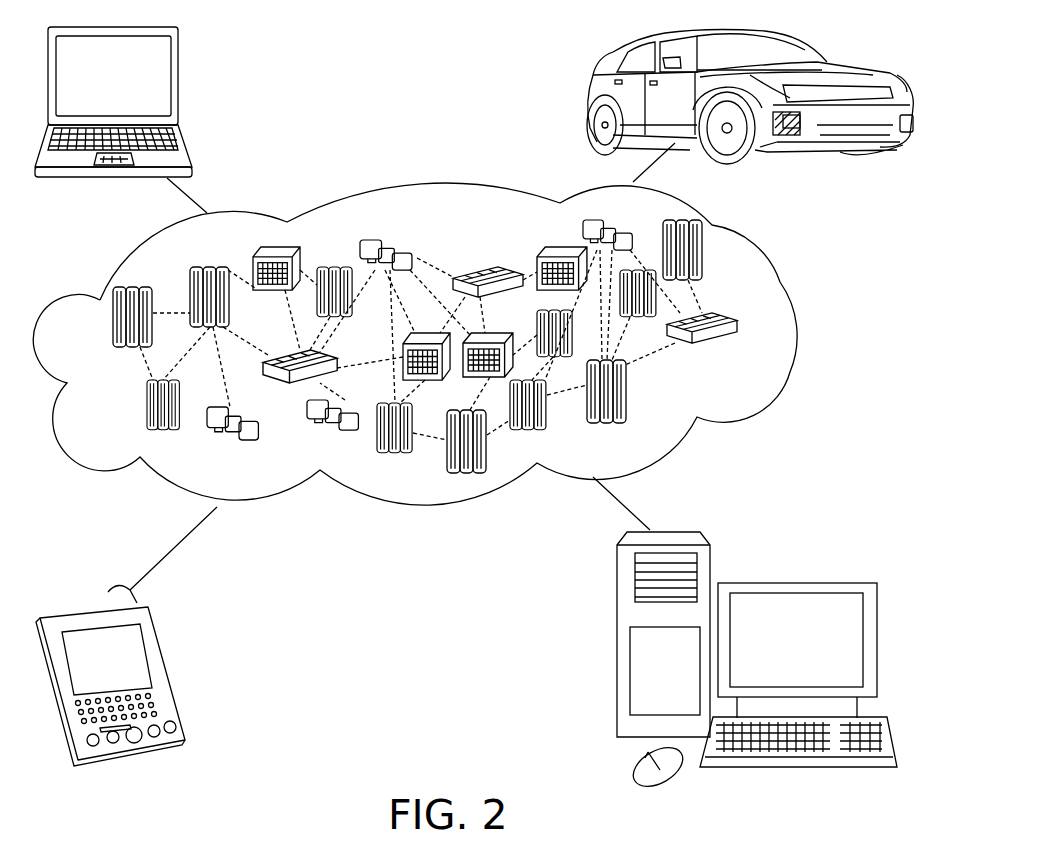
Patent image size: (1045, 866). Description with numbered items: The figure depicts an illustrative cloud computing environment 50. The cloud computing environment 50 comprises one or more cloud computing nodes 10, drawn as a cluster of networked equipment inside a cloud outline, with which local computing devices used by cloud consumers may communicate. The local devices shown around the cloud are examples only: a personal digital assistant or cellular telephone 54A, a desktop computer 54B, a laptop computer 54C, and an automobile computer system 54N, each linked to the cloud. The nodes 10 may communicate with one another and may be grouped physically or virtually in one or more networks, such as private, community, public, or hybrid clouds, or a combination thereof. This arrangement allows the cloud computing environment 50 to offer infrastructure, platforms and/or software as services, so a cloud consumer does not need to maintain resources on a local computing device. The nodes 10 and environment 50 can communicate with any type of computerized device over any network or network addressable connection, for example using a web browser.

The cloud computing nodes 10 is at (748, 353).
The cloud computing environment 50 is at (793, 327).
The personal digital assistant or cellular telephone 54A is at (167, 667).
The desktop computer 54B is at (793, 583).
The laptop computer 54C is at (178, 84).
The automobile computer system 54N is at (587, 98).